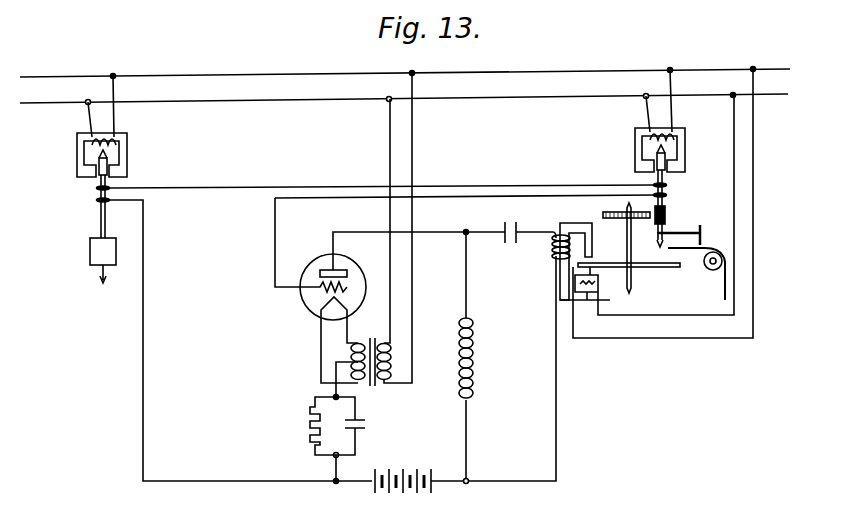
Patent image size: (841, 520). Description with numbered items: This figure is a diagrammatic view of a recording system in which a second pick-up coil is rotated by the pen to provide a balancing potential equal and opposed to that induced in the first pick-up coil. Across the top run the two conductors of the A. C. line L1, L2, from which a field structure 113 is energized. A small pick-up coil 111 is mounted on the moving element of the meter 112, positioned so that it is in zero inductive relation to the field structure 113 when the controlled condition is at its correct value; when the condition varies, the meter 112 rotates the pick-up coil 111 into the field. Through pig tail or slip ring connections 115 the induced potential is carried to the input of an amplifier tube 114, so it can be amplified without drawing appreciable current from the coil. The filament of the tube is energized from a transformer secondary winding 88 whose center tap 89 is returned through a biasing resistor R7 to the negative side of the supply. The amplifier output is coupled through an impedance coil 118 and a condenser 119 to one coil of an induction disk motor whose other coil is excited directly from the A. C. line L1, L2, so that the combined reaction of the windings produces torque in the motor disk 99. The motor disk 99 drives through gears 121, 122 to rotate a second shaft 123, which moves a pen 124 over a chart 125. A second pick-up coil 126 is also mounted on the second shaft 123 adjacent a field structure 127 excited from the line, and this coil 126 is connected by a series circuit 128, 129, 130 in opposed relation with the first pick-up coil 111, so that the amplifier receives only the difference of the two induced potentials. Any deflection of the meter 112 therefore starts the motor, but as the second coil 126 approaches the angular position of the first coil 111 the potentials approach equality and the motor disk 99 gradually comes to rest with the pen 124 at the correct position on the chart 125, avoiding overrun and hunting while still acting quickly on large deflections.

The field structure 113 is at (77, 153).
The pick-up coil 111 is at (97, 186).
The pig tail or slip ring connections 115 is at (97, 200).
The meter 112 is at (90, 251).
The series circuit conductor 129 is at (148, 354).
The series circuit conductor 128 is at (478, 187).
The series circuit conductor 130 is at (452, 199).
The amplifier tube 114 is at (323, 258).
The transformer secondary winding 88 is at (355, 348).
The center tap 89 is at (358, 360).
The biasing resistor R7 is at (311, 429).
The condenser 119 is at (512, 250).
The impedance coil 118 is at (478, 358).
The gear 121 is at (607, 213).
The motor disk 99 is at (656, 262).
The field structure 127 is at (635, 147).
The second pick-up coil 126 is at (665, 175).
The second shaft 123 is at (666, 197).
The gear 122 is at (668, 216).
The pen 124 is at (706, 233).
The chart 125 is at (722, 286).
The A. C. line L1 is at (175, 77).
The A. C. line L2 is at (180, 104).